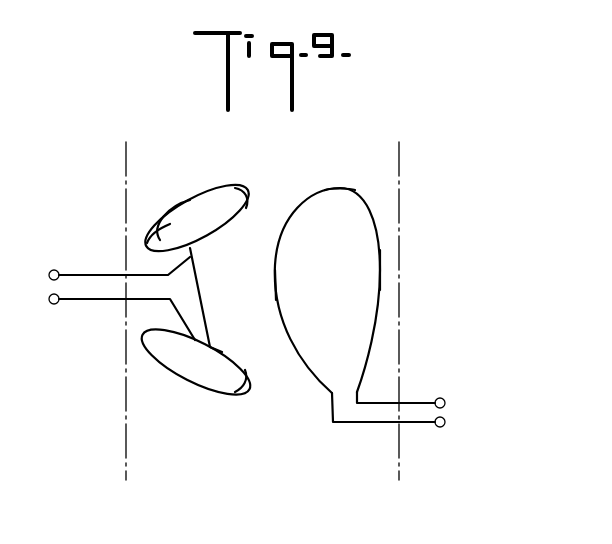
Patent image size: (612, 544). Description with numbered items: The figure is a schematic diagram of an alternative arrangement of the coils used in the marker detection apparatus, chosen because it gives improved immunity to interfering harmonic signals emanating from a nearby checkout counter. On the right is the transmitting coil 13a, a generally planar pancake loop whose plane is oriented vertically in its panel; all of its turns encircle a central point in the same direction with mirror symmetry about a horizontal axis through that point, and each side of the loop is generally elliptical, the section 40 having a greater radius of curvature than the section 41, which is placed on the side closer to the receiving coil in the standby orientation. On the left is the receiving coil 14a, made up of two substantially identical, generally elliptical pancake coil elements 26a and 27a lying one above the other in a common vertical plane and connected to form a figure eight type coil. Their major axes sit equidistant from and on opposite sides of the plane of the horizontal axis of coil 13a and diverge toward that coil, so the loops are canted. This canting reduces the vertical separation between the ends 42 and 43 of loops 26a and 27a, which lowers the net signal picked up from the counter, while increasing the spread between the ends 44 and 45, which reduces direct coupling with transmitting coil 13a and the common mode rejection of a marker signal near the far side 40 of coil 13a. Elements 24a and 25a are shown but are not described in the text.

The transmitting coil 13a is at (369, 168).
The receiving coil 14a is at (244, 187).
The electrode plate 24a is at (340, 187).
The connecting tab 25a is at (330, 396).
The coil element 26a is at (217, 190).
The coil element 27a is at (181, 382).
The section of greater radius of curvature 40 is at (380, 273).
The section of lesser radius of curvature 41 is at (275, 290).
The end of coil 26a 42 is at (150, 245).
The end of coil 27a 43 is at (150, 333).
The end of coil 26a 44 is at (248, 193).
The end of coil 27a 45 is at (247, 398).